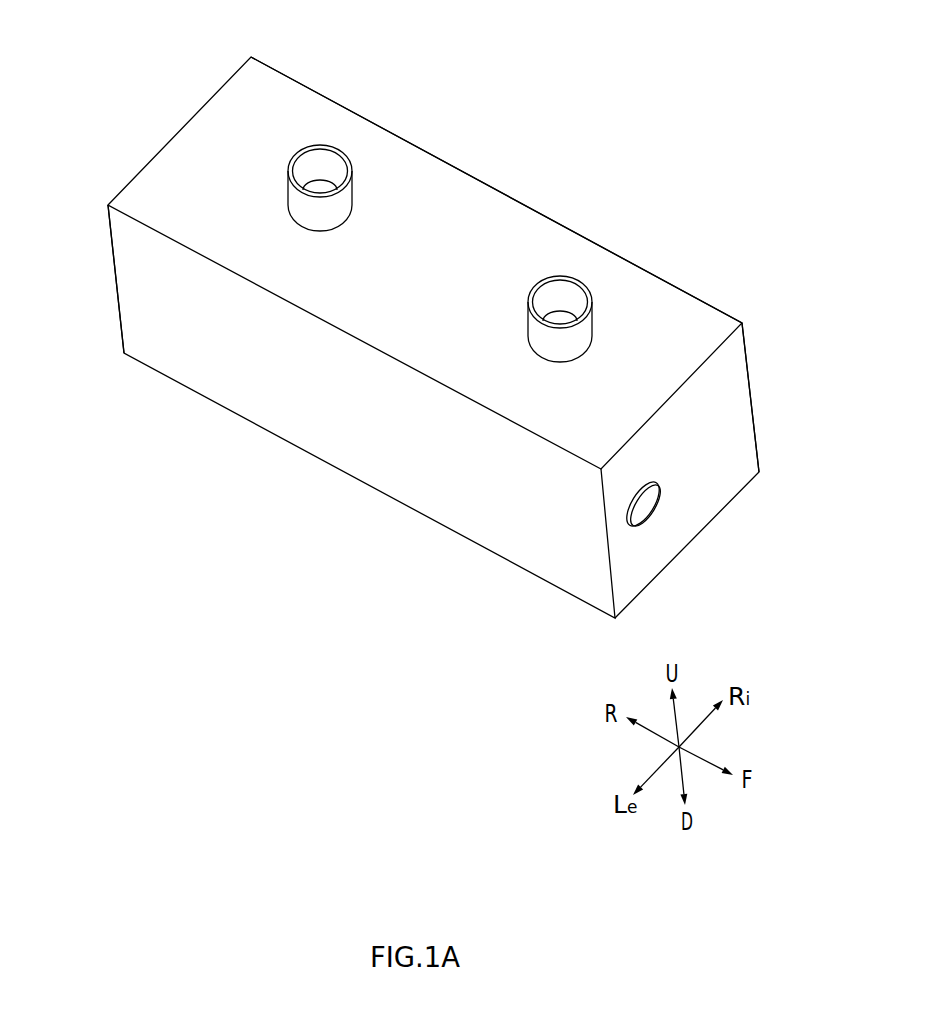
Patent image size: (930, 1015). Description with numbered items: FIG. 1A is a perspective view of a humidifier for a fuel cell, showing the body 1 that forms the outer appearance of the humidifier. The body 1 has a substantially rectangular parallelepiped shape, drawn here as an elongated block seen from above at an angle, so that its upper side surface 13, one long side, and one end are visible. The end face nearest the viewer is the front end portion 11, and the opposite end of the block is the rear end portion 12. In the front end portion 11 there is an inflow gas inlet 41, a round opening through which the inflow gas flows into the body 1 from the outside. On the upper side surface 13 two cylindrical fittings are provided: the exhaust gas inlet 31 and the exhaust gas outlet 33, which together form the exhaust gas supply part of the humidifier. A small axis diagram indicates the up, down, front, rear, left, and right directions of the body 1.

The body 1 is at (146, 83).
The front end portion 11 is at (737, 412).
The rear end portion 12 is at (116, 278).
The upper side surface 13 is at (477, 192).
The exhaust gas inlet 31 is at (327, 160).
The exhaust gas outlet 33 is at (567, 290).
The inflow gas inlet 41 is at (642, 503).